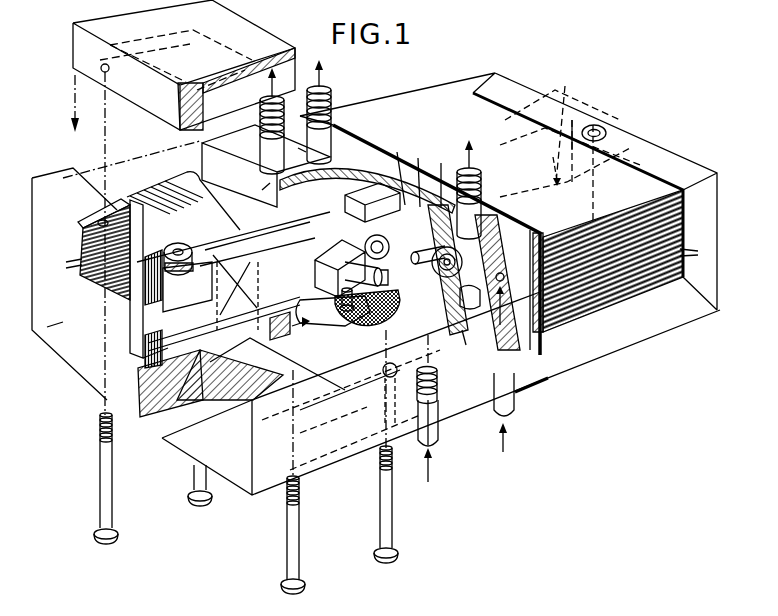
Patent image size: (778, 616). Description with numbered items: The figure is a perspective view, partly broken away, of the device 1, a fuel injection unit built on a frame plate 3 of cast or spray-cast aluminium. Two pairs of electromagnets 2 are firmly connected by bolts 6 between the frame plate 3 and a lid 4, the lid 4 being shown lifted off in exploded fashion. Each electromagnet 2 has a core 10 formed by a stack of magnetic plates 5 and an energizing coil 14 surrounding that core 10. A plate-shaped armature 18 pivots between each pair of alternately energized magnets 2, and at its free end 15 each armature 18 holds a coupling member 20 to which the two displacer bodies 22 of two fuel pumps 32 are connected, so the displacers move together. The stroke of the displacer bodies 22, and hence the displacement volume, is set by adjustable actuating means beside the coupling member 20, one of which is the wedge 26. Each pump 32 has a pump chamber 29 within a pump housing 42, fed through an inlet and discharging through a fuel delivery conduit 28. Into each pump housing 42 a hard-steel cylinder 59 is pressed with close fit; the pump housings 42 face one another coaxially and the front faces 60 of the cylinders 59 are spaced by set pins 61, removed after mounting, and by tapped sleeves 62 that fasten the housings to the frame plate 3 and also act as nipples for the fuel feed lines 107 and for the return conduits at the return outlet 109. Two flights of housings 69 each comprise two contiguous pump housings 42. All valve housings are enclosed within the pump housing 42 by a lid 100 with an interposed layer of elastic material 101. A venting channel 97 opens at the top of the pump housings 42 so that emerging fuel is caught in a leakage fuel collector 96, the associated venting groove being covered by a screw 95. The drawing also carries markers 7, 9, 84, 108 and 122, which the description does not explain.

The device 1 is at (528, 50).
The electromagnets 2 is at (497, 116).
The frame plate 3 is at (610, 345).
The lid 4 is at (172, 12).
The magnetic plates 5 is at (381, 258).
The bolts 6 is at (104, 486).
The heater block 7 is at (654, 292).
The pin 9 is at (207, 267).
The core 10 is at (85, 290).
The energizing coil 14 is at (137, 186).
The free end 15 is at (298, 262).
The armature 18 is at (249, 243).
The coupling member 20 is at (381, 215).
The displacer bodies 22 is at (398, 294).
The wedge 26 is at (337, 220).
The fuel delivery conduit 28 is at (322, 100).
The pump chamber 29 is at (412, 270).
The fuel pumps 32 is at (194, 161).
The pump housing 42 is at (250, 209).
The hard-steel cylinder 59 is at (443, 174).
The front faces 60 is at (420, 172).
The set pins 61 is at (348, 340).
The tapped sleeves 62 is at (490, 315).
The flights of housings 69 is at (206, 189).
The grommet 84 is at (598, 126).
The screw 95 is at (298, 155).
The leakage fuel collector 96 is at (415, 328).
The venting channel 97 is at (320, 143).
The lid 100 is at (250, 134).
The layer of elastic material 101 is at (270, 183).
The fuel feed lines 107 is at (529, 428).
The direction arrow 108 is at (440, 470).
The return outlet 109 is at (441, 431).
The link pin 122 is at (468, 350).